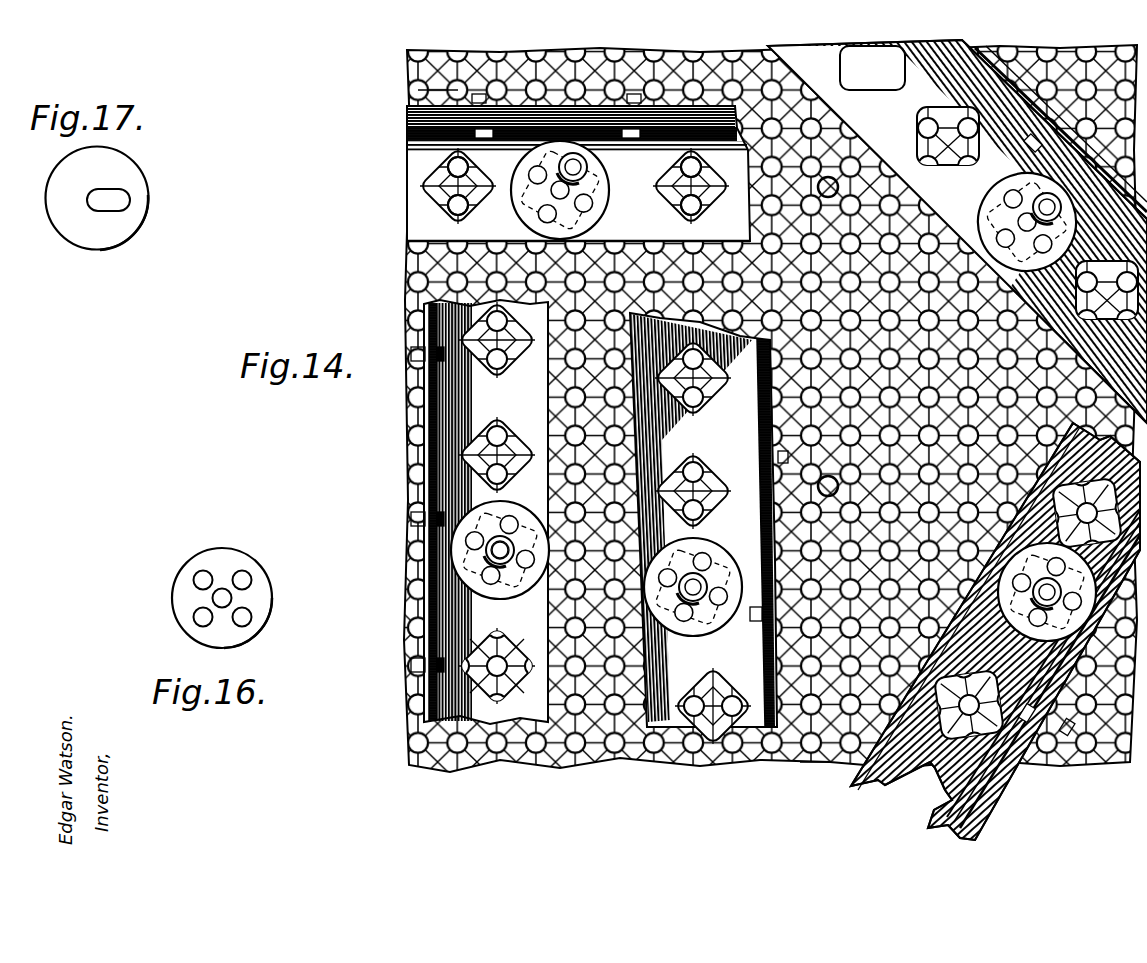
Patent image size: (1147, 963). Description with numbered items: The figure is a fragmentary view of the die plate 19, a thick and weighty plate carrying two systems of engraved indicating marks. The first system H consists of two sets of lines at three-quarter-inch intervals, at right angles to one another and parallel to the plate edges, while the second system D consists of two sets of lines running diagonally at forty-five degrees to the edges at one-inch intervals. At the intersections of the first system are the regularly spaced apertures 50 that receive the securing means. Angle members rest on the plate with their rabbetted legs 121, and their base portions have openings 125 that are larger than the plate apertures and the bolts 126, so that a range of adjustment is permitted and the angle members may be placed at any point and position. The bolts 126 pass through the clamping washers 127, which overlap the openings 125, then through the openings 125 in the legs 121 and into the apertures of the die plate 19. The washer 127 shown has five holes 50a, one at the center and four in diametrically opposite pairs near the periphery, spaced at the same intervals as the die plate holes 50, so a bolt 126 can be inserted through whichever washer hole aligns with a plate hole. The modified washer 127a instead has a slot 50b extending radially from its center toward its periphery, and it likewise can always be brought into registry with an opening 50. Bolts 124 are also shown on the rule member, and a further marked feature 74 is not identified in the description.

In FIG. 14, the second system of indicating lines D is at (470, 268).
In FIG. 14, the first system of indicating lines H is at (470, 68).
In FIG. 14, the die plate 19 is at (800, 762).
In FIG. 14, the apertures 50 is at (1072, 517).
In FIG. 16, the holes of the washer 50a is at (212, 598).
In FIG. 14, the holes of the washer 50a is at (500, 540).
In FIG. 17, the slot 50b is at (132, 197).
In FIG. 14, the hole at rib intersection 74 is at (828, 198).
In FIG. 14, the rabbetted legs 121 is at (418, 232).
In FIG. 14, the bolts 124 is at (582, 172).
In FIG. 14, the openings 125 is at (420, 190).
In FIG. 14, the bolts 126 is at (592, 182).
In FIG. 16, the clamping washer 127 is at (190, 560).
In FIG. 14, the clamping washer 127 is at (522, 212).
In FIG. 17, the modified washer 127a is at (56, 222).